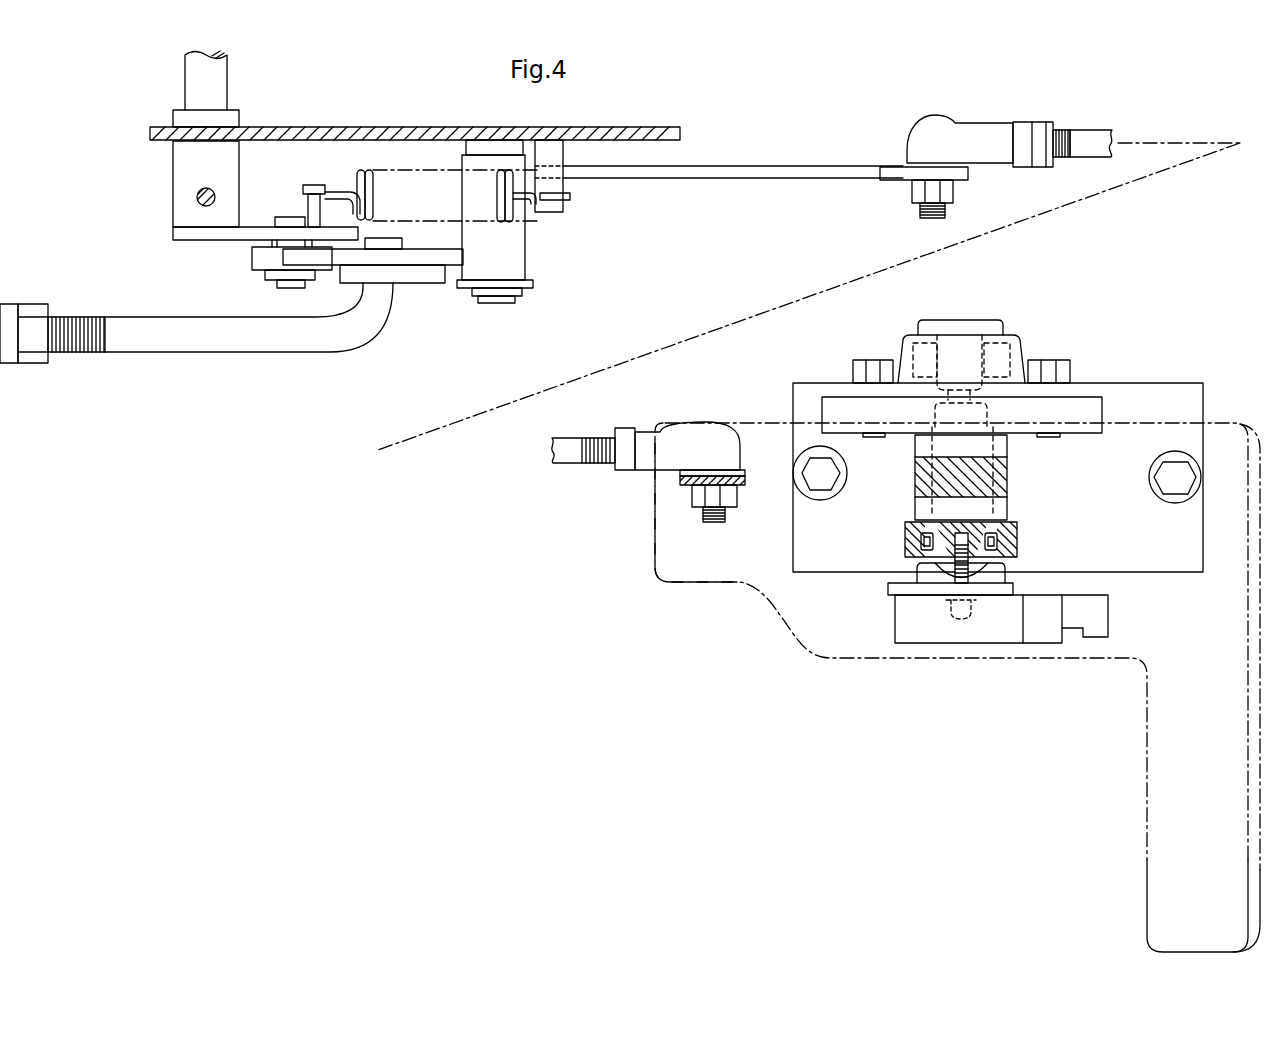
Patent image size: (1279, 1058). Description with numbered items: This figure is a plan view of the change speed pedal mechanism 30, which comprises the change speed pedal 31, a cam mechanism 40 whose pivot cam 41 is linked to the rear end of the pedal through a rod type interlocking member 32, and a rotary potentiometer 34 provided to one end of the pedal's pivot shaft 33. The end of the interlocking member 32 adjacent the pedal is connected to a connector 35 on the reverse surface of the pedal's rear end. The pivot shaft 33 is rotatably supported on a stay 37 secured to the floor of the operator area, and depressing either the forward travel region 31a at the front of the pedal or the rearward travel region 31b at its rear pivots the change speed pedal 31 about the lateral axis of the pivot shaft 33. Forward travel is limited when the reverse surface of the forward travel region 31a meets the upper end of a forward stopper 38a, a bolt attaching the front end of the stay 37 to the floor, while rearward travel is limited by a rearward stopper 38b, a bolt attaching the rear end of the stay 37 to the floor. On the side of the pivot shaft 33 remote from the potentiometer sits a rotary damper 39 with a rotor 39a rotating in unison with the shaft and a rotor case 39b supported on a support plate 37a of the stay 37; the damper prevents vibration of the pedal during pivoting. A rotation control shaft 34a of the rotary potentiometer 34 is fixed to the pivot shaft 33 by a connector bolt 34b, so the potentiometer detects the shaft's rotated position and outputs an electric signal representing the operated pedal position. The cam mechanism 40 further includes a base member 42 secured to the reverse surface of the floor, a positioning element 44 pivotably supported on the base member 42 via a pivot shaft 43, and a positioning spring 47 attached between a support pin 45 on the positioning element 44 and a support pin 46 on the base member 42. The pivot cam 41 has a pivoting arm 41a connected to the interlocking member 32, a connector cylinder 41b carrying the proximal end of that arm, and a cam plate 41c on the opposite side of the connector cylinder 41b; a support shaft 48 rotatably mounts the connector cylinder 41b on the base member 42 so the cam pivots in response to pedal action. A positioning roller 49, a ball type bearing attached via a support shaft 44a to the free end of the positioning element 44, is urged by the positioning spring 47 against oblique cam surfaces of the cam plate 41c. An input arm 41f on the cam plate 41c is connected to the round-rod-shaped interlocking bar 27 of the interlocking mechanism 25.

The interlocking mechanism 25 is at (196, 373).
The interlocking bar 27 is at (146, 353).
The change speed pedal mechanism 30 is at (387, 670).
The change speed pedal 31 is at (922, 687).
The forward travel region 31a is at (1158, 815).
The rearward travel region 31b is at (677, 545).
The interlocking member 32 is at (983, 128).
The pivot shaft 33 is at (1010, 452).
The rotary potentiometer 34 is at (989, 611).
The rotation control shaft 34a is at (990, 570).
The connector bolt 34b is at (968, 535).
The connector 35 is at (748, 480).
The stay 37 is at (996, 490).
The support plate 37a is at (1090, 405).
The forward stopper 38a is at (1178, 468).
The rearward stopper 38b is at (813, 468).
The rotary damper 39 is at (959, 384).
The rotor 39a is at (900, 345).
The rotor case 39b is at (1003, 330).
The cam mechanism 40 is at (630, 290).
The pivot cam 41 is at (660, 191).
The pivoting arm 41a is at (740, 178).
The connector cylinder 41b is at (516, 253).
The cam plate 41c is at (410, 266).
The input arm 41f is at (428, 284).
The base member 42 is at (623, 130).
The pivot shaft 43 is at (223, 88).
The positioning element 44 is at (196, 240).
The support shaft 44a is at (291, 289).
The support pin 45 is at (312, 185).
The support pin 46 is at (556, 212).
The positioning spring 47 is at (362, 170).
The support shaft 48 is at (500, 303).
The positioning roller 49 is at (257, 328).